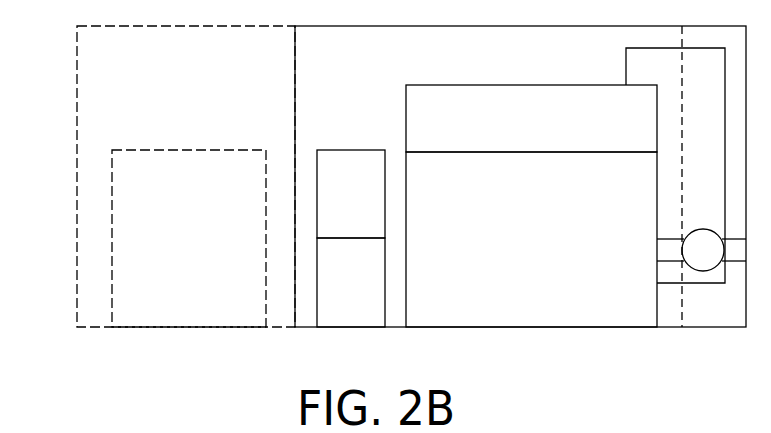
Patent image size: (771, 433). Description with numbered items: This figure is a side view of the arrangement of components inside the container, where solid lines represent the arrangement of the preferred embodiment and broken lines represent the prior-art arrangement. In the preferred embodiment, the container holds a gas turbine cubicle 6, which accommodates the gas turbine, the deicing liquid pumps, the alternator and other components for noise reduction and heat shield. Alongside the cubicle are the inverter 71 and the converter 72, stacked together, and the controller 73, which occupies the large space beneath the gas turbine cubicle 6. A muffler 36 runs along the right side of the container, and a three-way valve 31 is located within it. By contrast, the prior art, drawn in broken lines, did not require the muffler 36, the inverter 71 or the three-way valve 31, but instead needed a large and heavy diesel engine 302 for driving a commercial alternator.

The diesel engine 302 is at (153, 256).
The inverter 71 is at (336, 209).
The converter 72 is at (336, 294).
The gas turbine cubicle 6 is at (527, 137).
The controller 73 is at (509, 254).
The muffler 36 is at (693, 104).
The three-way valve 31 is at (690, 262).